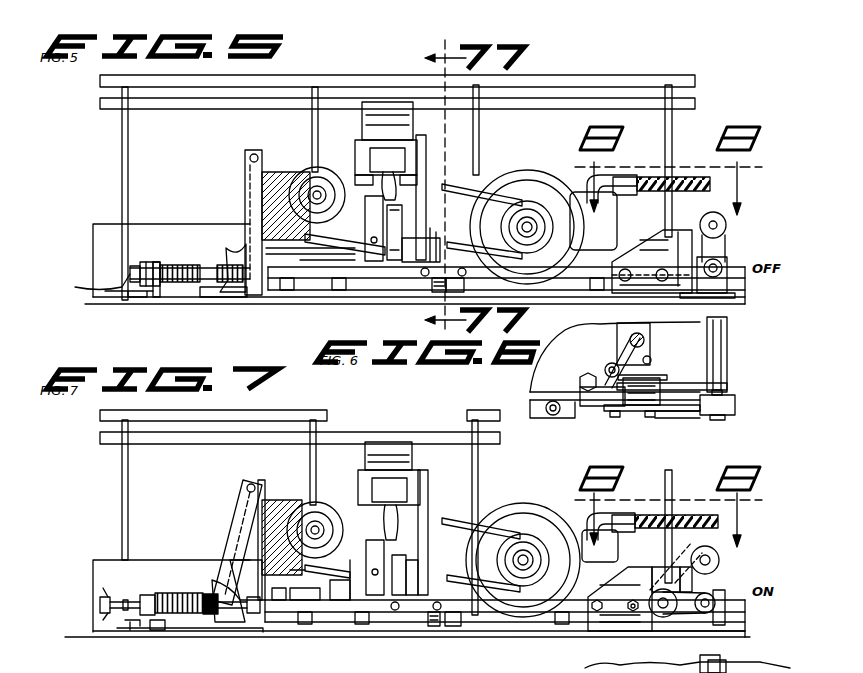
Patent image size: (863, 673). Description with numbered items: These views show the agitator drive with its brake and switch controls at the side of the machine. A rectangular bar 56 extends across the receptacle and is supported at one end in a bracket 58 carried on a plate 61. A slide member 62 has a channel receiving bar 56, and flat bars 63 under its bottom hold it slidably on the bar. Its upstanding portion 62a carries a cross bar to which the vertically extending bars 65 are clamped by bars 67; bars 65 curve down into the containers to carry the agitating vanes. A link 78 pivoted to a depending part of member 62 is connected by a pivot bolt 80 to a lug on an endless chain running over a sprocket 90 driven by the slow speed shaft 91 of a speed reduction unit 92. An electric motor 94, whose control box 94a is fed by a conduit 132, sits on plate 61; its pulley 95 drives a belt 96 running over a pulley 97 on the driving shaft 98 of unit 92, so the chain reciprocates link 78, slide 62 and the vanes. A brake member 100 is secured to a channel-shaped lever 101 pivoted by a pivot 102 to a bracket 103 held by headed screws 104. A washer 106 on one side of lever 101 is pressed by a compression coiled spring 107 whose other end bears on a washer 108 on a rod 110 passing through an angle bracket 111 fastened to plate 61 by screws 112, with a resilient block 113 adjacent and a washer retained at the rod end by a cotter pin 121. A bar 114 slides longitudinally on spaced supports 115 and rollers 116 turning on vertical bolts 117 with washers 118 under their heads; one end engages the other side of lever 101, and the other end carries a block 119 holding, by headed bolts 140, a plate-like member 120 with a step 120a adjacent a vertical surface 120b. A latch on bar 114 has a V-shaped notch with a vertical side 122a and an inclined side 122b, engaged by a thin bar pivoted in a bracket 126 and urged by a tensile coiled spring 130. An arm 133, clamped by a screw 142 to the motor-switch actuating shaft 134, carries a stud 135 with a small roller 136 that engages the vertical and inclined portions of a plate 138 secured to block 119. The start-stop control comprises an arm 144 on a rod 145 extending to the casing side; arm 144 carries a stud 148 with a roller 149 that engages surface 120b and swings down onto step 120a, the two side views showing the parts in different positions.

In FIG. 5, the bar 56 is at (375, 158).
In FIG. 5, the bracket 58 is at (390, 228).
In FIG. 7, the bracket 58 is at (384, 542).
In FIG. 5, the plate 61 is at (236, 298).
In FIG. 5, the slide member 62 is at (420, 135).
In FIG. 7, the slide member 62 is at (425, 472).
In FIG. 5, the upstanding portion 62a is at (380, 102).
In FIG. 7, the upstanding portion 62a is at (392, 442).
In FIG. 5, the flat bars 63 is at (386, 186).
In FIG. 5, the vertically extending bars 65 is at (128, 142).
In FIG. 7, the vertically extending bars 65 is at (397, 517).
In FIG. 5, the bars 67 is at (270, 85).
In FIG. 7, the bars 67 is at (290, 412).
In FIG. 7, the link 78 is at (420, 562).
In FIG. 7, the pivot bolt 80 is at (420, 548).
In FIG. 5, the sprocket 90 is at (415, 230).
In FIG. 5, the slow speed shaft 91 is at (360, 250).
In FIG. 7, the slow speed shaft 91 is at (350, 577).
In FIG. 7, the speed reduction unit 92 is at (352, 560).
In FIG. 5, the motor 94 is at (533, 172).
In FIG. 7, the motor 94 is at (523, 503).
In FIG. 5, the control box 94a is at (615, 212).
In FIG. 7, the control box 94a is at (615, 548).
In FIG. 5, the pulley 95 is at (530, 210).
In FIG. 7, the pulley 95 is at (527, 545).
In FIG. 5, the belt 96 is at (460, 187).
In FIG. 7, the belt 96 is at (458, 520).
In FIG. 5, the pulley 97 is at (300, 172).
In FIG. 7, the pulley 97 is at (292, 500).
In FIG. 5, the shaft 98 is at (317, 195).
In FIG. 7, the shaft 98 is at (315, 530).
In FIG. 5, the brake member 100 is at (310, 253).
In FIG. 7, the brake member 100 is at (265, 490).
In FIG. 5, the lever 101 is at (246, 200).
In FIG. 7, the lever 101 is at (240, 560).
In FIG. 5, the pivot 102 is at (256, 153).
In FIG. 7, the pivot 102 is at (246, 482).
In FIG. 5, the bracket 103 is at (220, 297).
In FIG. 7, the bracket 103 is at (240, 520).
In FIG. 7, the headed screws 104 is at (240, 637).
In FIG. 5, the washer 106 is at (232, 250).
In FIG. 7, the washer 106 is at (212, 590).
In FIG. 5, the compression coiled spring 107 is at (222, 265).
In FIG. 7, the compression coiled spring 107 is at (200, 594).
In FIG. 5, the washer 108 is at (175, 265).
In FIG. 7, the washer 108 is at (175, 614).
In FIG. 5, the rod 110 is at (170, 282).
In FIG. 5, the angle bracket 111 is at (157, 300).
In FIG. 7, the angle bracket 111 is at (152, 632).
In FIG. 5, the screws 112 is at (112, 300).
In FIG. 7, the screws 112 is at (130, 632).
In FIG. 5, the block of resilient material 113 is at (150, 262).
In FIG. 7, the block of resilient material 113 is at (148, 595).
In FIG. 5, the bar 114 is at (532, 275).
In FIG. 7, the bar 114 is at (482, 612).
In FIG. 7, the supports 115 is at (310, 625).
In FIG. 7, the rollers 116 is at (318, 590).
In FIG. 6, the bolts 117 is at (553, 416).
In FIG. 7, the bolts 117 is at (98, 600).
In FIG. 5, the washers 118 is at (594, 258).
In FIG. 6, the washers 118 is at (532, 402).
In FIG. 5, the block 119 is at (93, 280).
In FIG. 6, the block 119 is at (728, 383).
In FIG. 7, the block 119 is at (112, 598).
In FIG. 6, the plate-like member 120 is at (672, 418).
In FIG. 7, the plate-like member 120 is at (600, 633).
In FIG. 7, the shoulder or step 120a is at (722, 622).
In FIG. 7, the vertical surface 120b is at (700, 548).
In FIG. 5, the cotter pin 121 is at (134, 265).
In FIG. 7, the cotter pin 121 is at (105, 597).
In FIG. 5, the vertical side 122a is at (464, 285).
In FIG. 7, the upwardly inclined side 122b is at (448, 628).
In FIG. 7, the bracket 126 is at (437, 628).
In FIG. 5, the tensile coiled spring 130 is at (432, 305).
In FIG. 5, the conduit 132 is at (685, 178).
In FIG. 6, the arm 133 is at (611, 363).
In FIG. 7, the arm 133 is at (683, 663).
In FIG. 6, the shaft 134 is at (632, 332).
In FIG. 6, the stud 135 is at (603, 408).
In FIG. 6, the roller 136 is at (586, 372).
In FIG. 6, the plate 138 is at (652, 372).
In FIG. 6, the headed bolts 140 is at (652, 414).
In FIG. 7, the headed bolts 140 is at (638, 612).
In FIG. 6, the screw 142 is at (645, 333).
In FIG. 5, the arm 144 is at (726, 245).
In FIG. 7, the arm 144 is at (708, 587).
In FIG. 6, the rod 145 is at (720, 362).
In FIG. 7, the rod 145 is at (730, 668).
In FIG. 5, the stud 148 is at (726, 228).
In FIG. 5, the roller 149 is at (703, 216).
In FIG. 6, the roller 149 is at (736, 405).